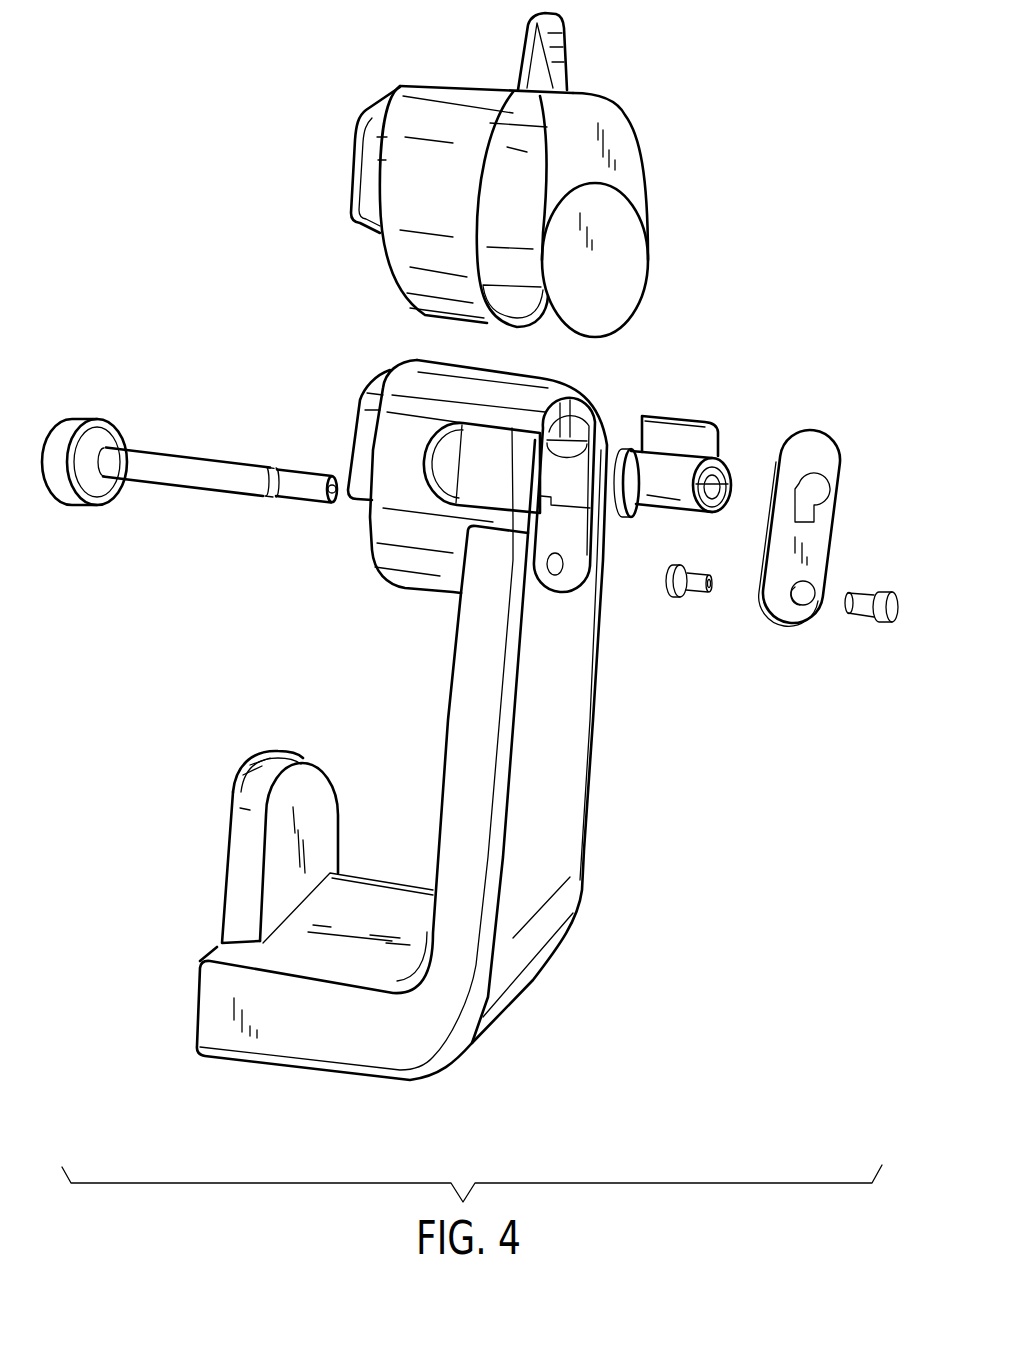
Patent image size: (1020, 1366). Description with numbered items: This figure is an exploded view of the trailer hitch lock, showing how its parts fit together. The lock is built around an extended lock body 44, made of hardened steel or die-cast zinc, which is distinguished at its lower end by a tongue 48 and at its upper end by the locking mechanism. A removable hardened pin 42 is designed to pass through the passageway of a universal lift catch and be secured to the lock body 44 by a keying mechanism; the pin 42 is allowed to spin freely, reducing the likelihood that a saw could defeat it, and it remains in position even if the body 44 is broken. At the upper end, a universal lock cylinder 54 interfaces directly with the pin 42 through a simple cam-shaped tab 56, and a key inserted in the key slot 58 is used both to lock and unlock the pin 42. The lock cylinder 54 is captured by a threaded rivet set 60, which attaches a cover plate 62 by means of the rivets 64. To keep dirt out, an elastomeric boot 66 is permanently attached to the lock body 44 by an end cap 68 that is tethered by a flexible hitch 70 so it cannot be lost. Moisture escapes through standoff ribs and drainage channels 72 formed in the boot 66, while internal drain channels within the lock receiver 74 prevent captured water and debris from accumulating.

The pin 42 is at (72, 413).
The lock body 44 is at (529, 986).
The tongue 48 is at (242, 765).
The lock cylinder 54 is at (675, 410).
The cam-shaped tab 56 is at (632, 523).
The key slot 58 is at (730, 474).
The threaded rivet set 60 is at (782, 605).
The cover plate 62 is at (807, 427).
The rivets 64 is at (687, 577).
The elastomeric boot 66 is at (417, 107).
The end cap 68 is at (618, 117).
The flexible hitch 70 is at (513, 20).
The standoff ribs and drainage channels 72 is at (523, 300).
The lock receiver 74 is at (556, 488).